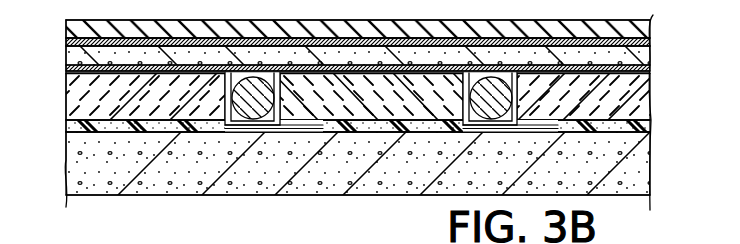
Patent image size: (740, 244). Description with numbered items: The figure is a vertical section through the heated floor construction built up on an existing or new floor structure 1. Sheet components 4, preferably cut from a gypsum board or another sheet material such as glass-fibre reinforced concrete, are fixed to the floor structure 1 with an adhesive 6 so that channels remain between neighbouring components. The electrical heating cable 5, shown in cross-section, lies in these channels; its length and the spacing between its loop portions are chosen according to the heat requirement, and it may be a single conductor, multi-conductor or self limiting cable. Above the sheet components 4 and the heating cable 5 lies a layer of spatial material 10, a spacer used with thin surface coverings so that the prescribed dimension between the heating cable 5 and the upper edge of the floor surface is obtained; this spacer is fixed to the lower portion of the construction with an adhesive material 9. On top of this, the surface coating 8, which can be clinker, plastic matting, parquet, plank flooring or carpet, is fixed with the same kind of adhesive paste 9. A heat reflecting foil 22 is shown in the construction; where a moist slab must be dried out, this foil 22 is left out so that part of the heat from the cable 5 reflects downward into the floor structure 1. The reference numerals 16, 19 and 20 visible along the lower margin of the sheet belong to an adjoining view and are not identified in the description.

The floor structure 1 is at (82, 172).
The transverse sheet component 4 is at (83, 98).
The heating cable 5 is at (492, 92).
The adhesive 6 is at (67, 131).
The surface coating 8 is at (122, 32).
The adhesive paste 9 is at (170, 41).
The spatial material 10 is at (75, 53).
The heat reflecting foil 22 is at (224, 72).
The element 16 is at (120, 243).
The element 19 is at (266, 236).
The element 20 is at (241, 240).